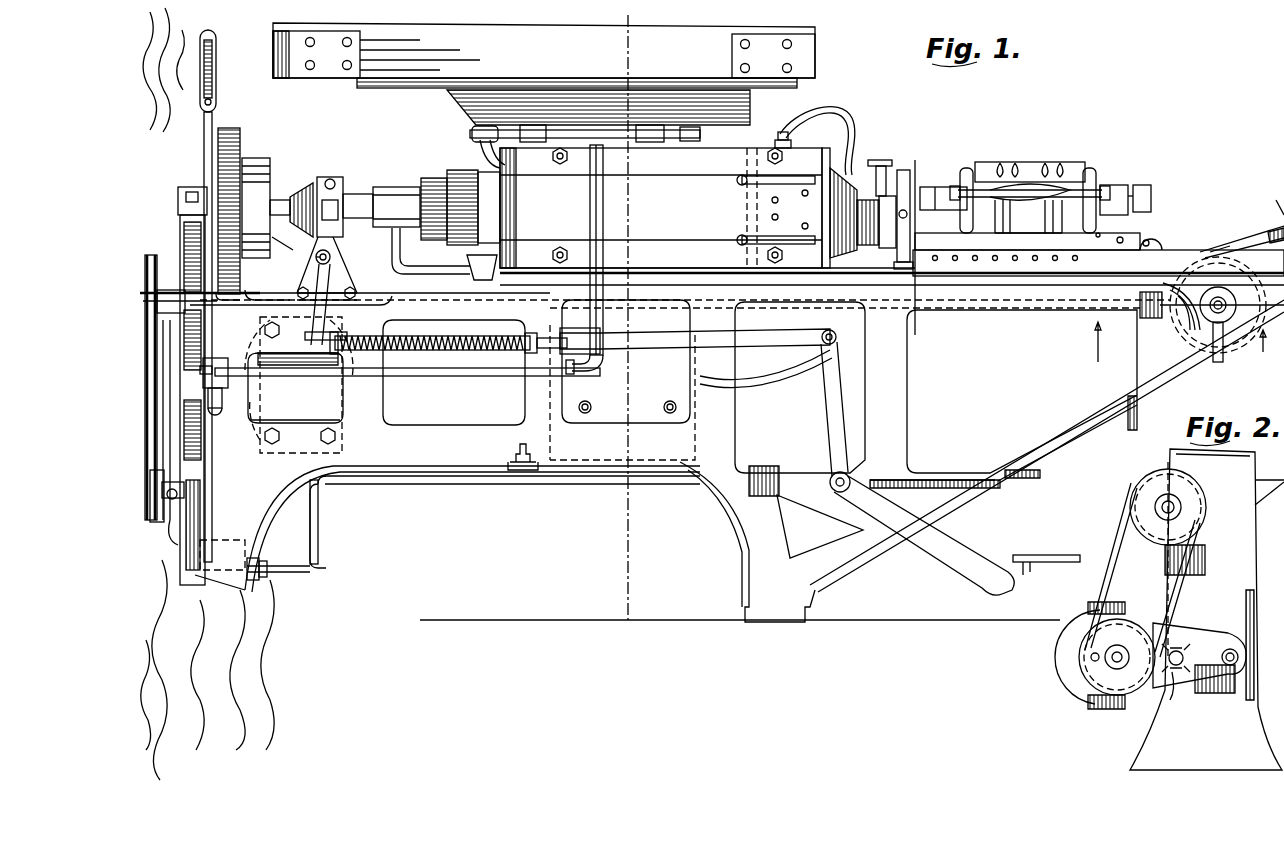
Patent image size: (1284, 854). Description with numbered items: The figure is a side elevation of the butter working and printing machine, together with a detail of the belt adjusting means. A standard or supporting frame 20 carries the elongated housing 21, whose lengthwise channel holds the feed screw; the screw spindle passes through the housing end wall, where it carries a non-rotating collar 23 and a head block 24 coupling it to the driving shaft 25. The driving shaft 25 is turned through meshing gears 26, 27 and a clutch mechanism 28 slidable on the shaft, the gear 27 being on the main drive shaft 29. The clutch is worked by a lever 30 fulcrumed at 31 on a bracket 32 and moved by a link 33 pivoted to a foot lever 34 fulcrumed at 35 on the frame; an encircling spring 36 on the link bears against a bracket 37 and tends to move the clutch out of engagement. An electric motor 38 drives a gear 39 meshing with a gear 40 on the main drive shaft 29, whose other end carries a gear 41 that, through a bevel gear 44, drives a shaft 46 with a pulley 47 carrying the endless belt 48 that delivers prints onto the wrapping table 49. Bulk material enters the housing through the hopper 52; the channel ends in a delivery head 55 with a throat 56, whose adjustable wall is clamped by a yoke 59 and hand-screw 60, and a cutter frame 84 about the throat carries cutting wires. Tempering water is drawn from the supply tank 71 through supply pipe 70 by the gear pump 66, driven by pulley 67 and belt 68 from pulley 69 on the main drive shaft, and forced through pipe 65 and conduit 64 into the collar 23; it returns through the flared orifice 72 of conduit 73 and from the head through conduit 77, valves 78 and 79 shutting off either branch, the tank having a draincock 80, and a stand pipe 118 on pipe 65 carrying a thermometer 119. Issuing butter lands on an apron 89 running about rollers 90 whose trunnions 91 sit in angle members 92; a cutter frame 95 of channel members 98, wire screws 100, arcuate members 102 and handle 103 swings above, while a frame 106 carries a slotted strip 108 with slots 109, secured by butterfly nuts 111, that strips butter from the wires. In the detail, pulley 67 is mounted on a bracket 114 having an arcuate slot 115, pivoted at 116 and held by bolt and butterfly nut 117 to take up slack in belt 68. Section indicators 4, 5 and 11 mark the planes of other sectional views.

In FIG. 1, the section line 4 is at (638, 610).
In FIG. 1, the section line 5 is at (1179, 355).
In FIG. 1, the section line 11 is at (896, 159).
In FIG. 1, the standard or supporting frame 20 is at (718, 502).
In FIG. 2, the standard or supporting frame 20 is at (1266, 602).
In FIG. 1, the elongated housing 21 is at (470, 180).
In FIG. 1, the non-rotating collar 23 is at (440, 186).
In FIG. 1, the head block 24 is at (418, 270).
In FIG. 1, the driving shaft 25 is at (358, 196).
In FIG. 1, the gear 26 is at (242, 152).
In FIG. 1, the gear 27 is at (245, 296).
In FIG. 1, the clutch mechanism 28 is at (302, 184).
In FIG. 1, the main drive shaft 29 is at (262, 303).
In FIG. 2, the main drive shaft 29 is at (1163, 510).
In FIG. 1, the lever 30 is at (316, 259).
In FIG. 1, the fulcrum 31 is at (280, 230).
In FIG. 1, the bracket 32 is at (335, 258).
In FIG. 1, the link 33 is at (643, 349).
In FIG. 1, the foot lever 34 is at (970, 550).
In FIG. 1, the fulcrum 35 is at (836, 494).
In FIG. 1, the encircling spring 36 is at (430, 350).
In FIG. 1, the bracket 37 is at (528, 350).
In FIG. 1, the electric motor 38 is at (454, 372).
In FIG. 1, the gear 39 is at (299, 385).
In FIG. 1, the gear 40 is at (186, 333).
In FIG. 1, the gear 41 is at (1130, 318).
In FIG. 1, the bevel gear 44 is at (1184, 323).
In FIG. 1, the shaft 46 is at (1224, 311).
In FIG. 1, the pulley 47 is at (1222, 250).
In FIG. 1, the endless carrier or belt 48 is at (1240, 244).
In FIG. 1, the wrapping table 49 is at (1278, 205).
In FIG. 1, the feed trough or hopper 52 is at (429, 47).
In FIG. 1, the delivery head 55 is at (882, 188).
In FIG. 1, the throat portion 56 is at (870, 248).
In FIG. 1, the strap or yoke member 59 is at (218, 404).
In FIG. 1, the hand-screw 60 is at (862, 165).
In FIG. 1, the feed line or conduit 64 is at (529, 190).
In FIG. 1, the pipe 65 is at (590, 216).
In FIG. 1, the pump 66 is at (240, 542).
In FIG. 2, the pump 66 is at (1070, 672).
In FIG. 1, the pulley 67 is at (158, 466).
In FIG. 2, the pulley 67 is at (1098, 674).
In FIG. 1, the belt 68 is at (157, 436).
In FIG. 2, the belt 68 is at (1178, 585).
In FIG. 1, the pulley 69 is at (157, 260).
In FIG. 2, the pulley 69 is at (1156, 544).
In FIG. 1, the feed or supply line 70 is at (322, 500).
In FIG. 1, the supply tank 71 is at (603, 437).
In FIG. 1, the cup or flared orifice 72 is at (468, 262).
In FIG. 1, the conduit 73 is at (505, 378).
In FIG. 1, the conduit 77 is at (745, 378).
In FIG. 1, the valve 78 is at (512, 142).
In FIG. 1, the valve 79 is at (652, 142).
In FIG. 1, the draincock 80 is at (525, 455).
In FIG. 1, the frame 84 is at (912, 186).
In FIG. 1, the endless member or apron 89 is at (1149, 241).
In FIG. 1, the rollers 90 is at (1152, 246).
In FIG. 1, the trunnions 91 is at (712, 270).
In FIG. 1, the side frames or angle members 92 is at (1052, 235).
In FIG. 1, the cutter frame 95 is at (1090, 233).
In FIG. 1, the channel members 98 is at (1123, 238).
In FIG. 1, the threaded member or screw 100 is at (1100, 233).
In FIG. 1, the arcuate frame members 102 is at (965, 168).
In FIG. 1, the operating handle 103 is at (1030, 186).
In FIG. 1, the frame 106 is at (1003, 235).
In FIG. 1, the strip or block 108 is at (1123, 188).
In FIG. 1, the slots 109 is at (1130, 196).
In FIG. 1, the butter-fly nuts 111 is at (1085, 145).
In FIG. 1, the bracket 114 is at (178, 535).
In FIG. 2, the bracket 114 is at (1215, 650).
In FIG. 2, the arcuate slot 115 is at (1182, 650).
In FIG. 1, the pivot 116 is at (178, 496).
In FIG. 2, the pivot 116 is at (1238, 655).
In FIG. 1, the bolt and butterfly nut 117 is at (184, 486).
In FIG. 2, the bolt and butterfly nut 117 is at (1175, 688).
In FIG. 1, the stand pipe or extension 118 is at (213, 125).
In FIG. 1, the thermometer 119 is at (216, 42).